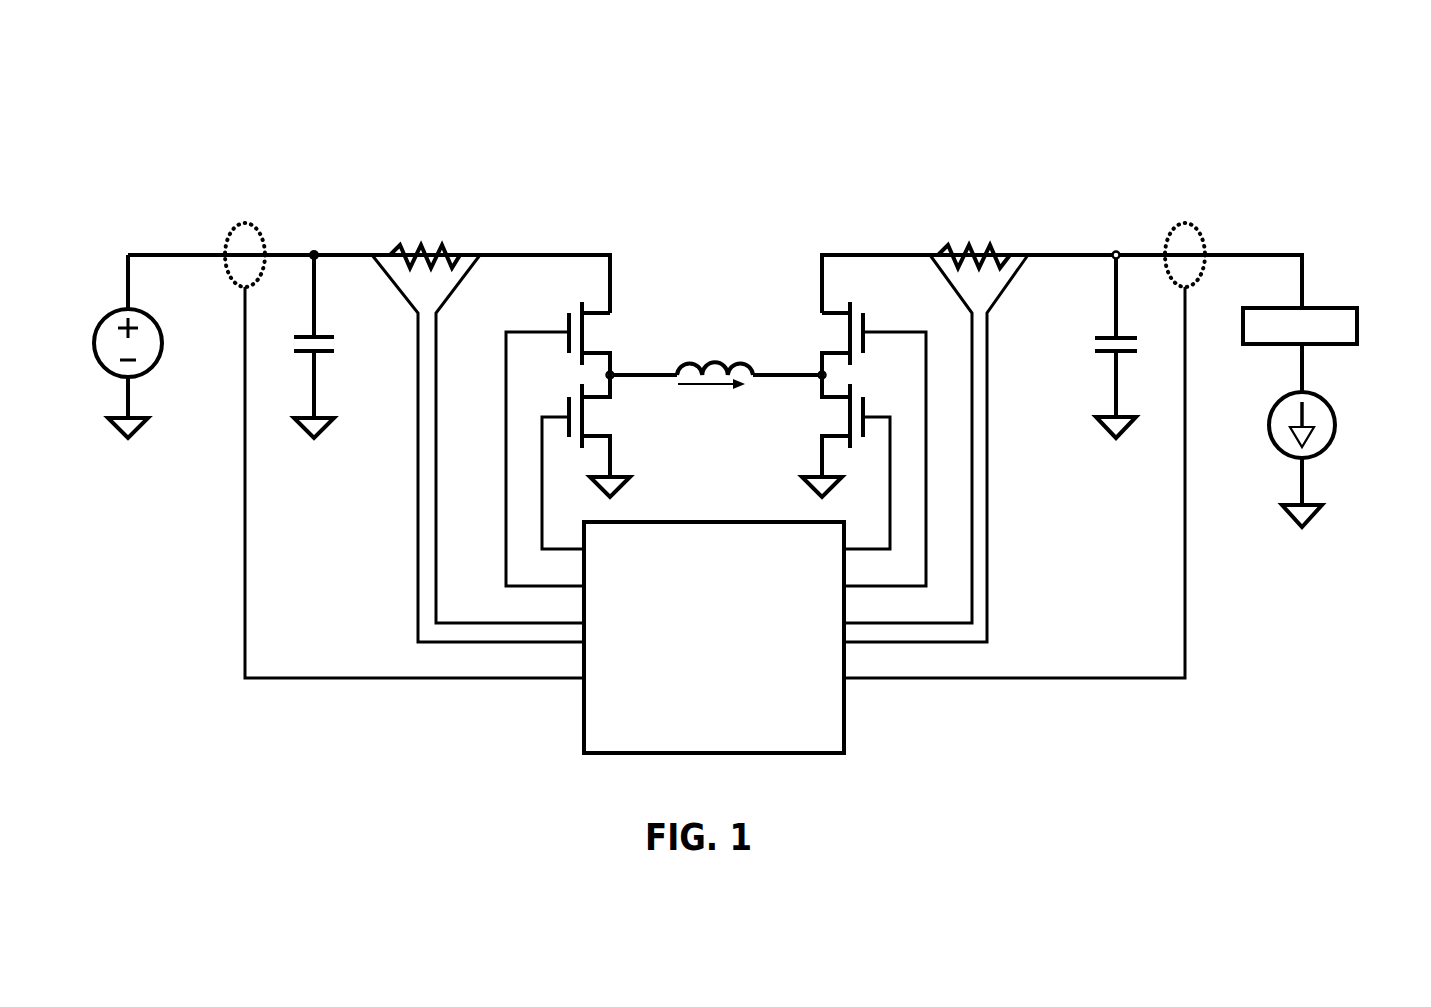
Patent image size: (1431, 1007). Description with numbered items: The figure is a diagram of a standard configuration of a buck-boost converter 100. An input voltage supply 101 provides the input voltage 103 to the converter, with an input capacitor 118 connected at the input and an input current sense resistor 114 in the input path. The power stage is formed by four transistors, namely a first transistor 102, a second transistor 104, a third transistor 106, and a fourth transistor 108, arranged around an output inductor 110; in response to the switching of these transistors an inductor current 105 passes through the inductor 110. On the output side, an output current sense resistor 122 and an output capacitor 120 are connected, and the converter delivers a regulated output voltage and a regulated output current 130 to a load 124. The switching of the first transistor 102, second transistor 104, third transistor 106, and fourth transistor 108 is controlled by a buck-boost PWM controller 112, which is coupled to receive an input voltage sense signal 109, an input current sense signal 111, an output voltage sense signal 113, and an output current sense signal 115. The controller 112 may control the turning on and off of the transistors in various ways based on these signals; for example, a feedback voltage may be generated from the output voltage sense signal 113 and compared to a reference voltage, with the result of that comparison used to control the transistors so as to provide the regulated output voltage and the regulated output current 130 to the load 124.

The buck-boost converter 100 is at (722, 86).
The input voltage supply 101 is at (215, 219).
The transistor Q1 102 is at (636, 336).
The input voltage Vin 103 is at (1216, 207).
The transistor Q2 104 is at (637, 422).
The inductor current IL 105 is at (714, 414).
The transistor Q3 106 is at (797, 335).
The transistor Q4 108 is at (797, 422).
The input voltage sense signal 109 is at (238, 520).
The inductor Lout 110 is at (713, 330).
The input current sense signal 111 is at (410, 513).
The buck-boost PWM controller 112 is at (714, 637).
The output voltage sense signal 113 is at (1186, 546).
The input current sense resistor R1 114 is at (438, 165).
The output current sense signal 115 is at (990, 501).
The input capacitor Cin 118 is at (336, 341).
The output capacitor Cout 120 is at (1093, 349).
The output current sense resistor R2 122 is at (975, 170).
The load 124 is at (1359, 320).
The output current Iload 130 is at (1342, 401).